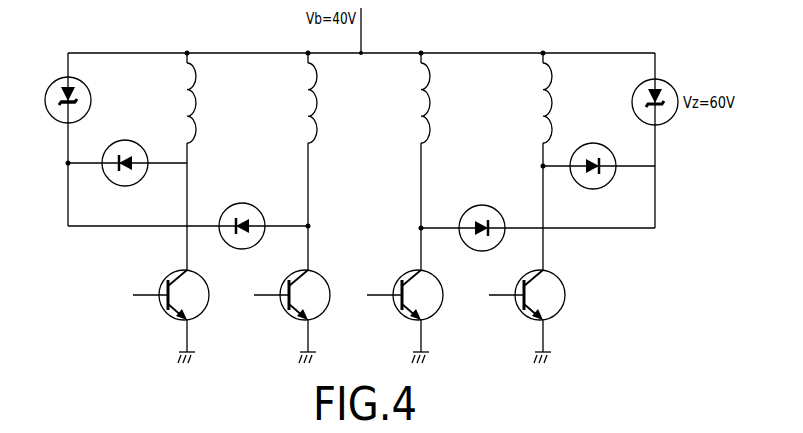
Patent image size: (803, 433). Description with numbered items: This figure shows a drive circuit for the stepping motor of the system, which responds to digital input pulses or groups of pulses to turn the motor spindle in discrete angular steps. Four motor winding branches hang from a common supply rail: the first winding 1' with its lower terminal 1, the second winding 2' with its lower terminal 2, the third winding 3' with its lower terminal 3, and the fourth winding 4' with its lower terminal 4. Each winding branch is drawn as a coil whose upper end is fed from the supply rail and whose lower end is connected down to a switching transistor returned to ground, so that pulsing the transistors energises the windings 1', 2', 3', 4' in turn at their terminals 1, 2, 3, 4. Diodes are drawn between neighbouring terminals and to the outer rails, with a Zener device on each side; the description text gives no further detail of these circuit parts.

The first phase winding lower terminal / drive transistor 1 is at (171, 247).
The first phase winding 1' is at (182, 98).
The second phase winding lower terminal / drive transistor 2 is at (292, 247).
The second phase winding 2' is at (303, 98).
The third phase winding lower terminal / drive transistor 3 is at (405, 247).
The third phase winding 3' is at (416, 98).
The fourth phase winding lower terminal / drive transistor 4 is at (527, 247).
The fourth phase winding 4' is at (538, 98).